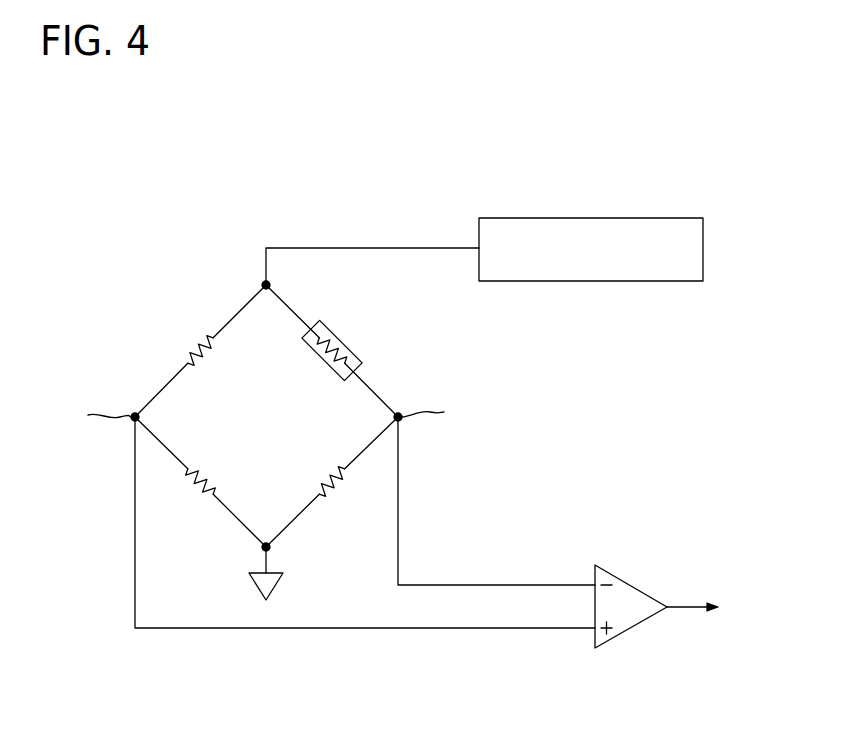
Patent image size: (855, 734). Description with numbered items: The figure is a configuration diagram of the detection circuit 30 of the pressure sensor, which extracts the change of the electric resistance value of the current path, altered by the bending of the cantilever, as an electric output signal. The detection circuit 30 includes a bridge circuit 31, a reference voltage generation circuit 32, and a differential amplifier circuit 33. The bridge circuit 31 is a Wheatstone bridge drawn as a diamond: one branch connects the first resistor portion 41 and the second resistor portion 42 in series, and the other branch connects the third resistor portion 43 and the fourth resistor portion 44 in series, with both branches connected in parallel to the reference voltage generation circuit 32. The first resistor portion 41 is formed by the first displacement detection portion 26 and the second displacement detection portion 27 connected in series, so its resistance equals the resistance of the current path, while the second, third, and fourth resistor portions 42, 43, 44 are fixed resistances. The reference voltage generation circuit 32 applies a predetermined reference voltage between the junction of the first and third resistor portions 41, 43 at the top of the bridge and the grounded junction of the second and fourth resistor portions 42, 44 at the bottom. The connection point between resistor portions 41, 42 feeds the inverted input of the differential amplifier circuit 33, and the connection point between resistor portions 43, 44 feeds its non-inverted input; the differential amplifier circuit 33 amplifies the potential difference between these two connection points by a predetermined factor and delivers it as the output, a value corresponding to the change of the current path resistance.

The detection circuit 30 is at (152, 212).
The bridge circuit 31 is at (128, 328).
The reference voltage generation circuit 32 is at (703, 248).
The differential amplifier circuit 33 is at (627, 580).
The first resistor portion 41 is at (332, 340).
The second resistor portion 42 is at (325, 490).
The third resistor portion 43 is at (210, 340).
The fourth resistor portion 44 is at (200, 492).
The first displacement detection portion 26 is at (362, 358).
The second displacement detection portion 27 is at (332, 350).